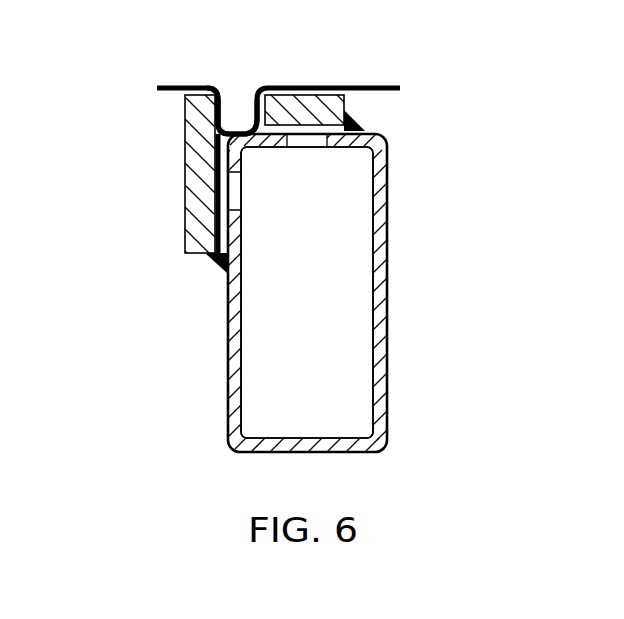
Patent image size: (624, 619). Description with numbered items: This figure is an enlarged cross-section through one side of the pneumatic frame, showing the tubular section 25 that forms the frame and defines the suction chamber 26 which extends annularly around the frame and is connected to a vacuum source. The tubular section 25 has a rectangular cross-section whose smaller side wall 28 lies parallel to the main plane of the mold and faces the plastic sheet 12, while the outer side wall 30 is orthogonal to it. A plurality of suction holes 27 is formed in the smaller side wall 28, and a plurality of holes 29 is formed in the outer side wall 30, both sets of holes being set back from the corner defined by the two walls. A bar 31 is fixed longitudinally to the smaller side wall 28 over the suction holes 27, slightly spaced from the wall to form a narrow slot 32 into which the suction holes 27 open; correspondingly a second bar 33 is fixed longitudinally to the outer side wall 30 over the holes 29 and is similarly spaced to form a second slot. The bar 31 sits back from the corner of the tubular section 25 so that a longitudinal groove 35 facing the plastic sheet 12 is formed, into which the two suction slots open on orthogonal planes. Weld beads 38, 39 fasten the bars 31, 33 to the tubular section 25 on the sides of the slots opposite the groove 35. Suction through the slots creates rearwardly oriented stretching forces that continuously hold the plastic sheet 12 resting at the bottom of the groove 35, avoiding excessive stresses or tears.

The plastic sheet 12 is at (380, 86).
The tubular section 25 is at (394, 298).
The suction chamber 26 is at (340, 237).
The suction holes 27 is at (313, 141).
The smaller side wall 28 is at (247, 108).
The holes 29 is at (237, 185).
The outer side wall 30 is at (233, 365).
The bar 31 is at (223, 228).
The slot 32 is at (292, 105).
The second bar 33 is at (198, 120).
The longitudinal groove 35 is at (232, 102).
The weld bead 38 is at (362, 123).
The weld bead 39 is at (213, 262).